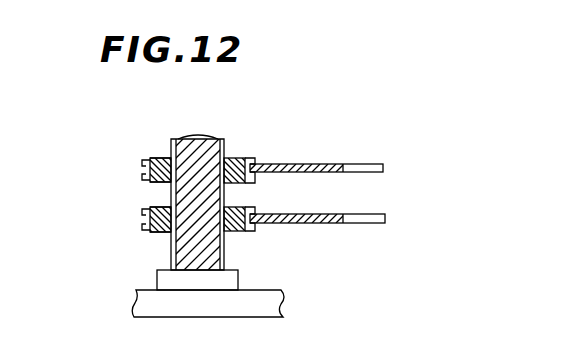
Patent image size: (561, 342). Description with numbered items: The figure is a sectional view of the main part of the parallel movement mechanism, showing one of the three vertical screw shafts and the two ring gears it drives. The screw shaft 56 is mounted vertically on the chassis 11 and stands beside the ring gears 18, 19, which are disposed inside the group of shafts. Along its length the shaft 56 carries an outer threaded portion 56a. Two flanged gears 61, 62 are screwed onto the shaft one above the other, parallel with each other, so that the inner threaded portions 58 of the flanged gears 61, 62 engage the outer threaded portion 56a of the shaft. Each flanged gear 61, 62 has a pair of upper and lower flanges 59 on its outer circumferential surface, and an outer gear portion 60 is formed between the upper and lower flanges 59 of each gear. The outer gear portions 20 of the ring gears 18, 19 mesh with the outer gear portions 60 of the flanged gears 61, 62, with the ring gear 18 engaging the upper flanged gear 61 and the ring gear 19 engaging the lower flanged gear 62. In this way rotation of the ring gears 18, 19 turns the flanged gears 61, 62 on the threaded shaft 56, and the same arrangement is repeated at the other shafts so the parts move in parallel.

The chassis 11 is at (285, 297).
The ring gear 18 is at (383, 168).
The ring gear 19 is at (385, 220).
The outer gear portion 20 is at (245, 158).
The screw shaft 56 is at (196, 140).
The outer threaded portion 56a is at (228, 150).
The inner threaded portion 58 is at (178, 140).
The flange 59 is at (145, 160).
The outer gear portion 60 is at (143, 171).
The flanged gear 61 is at (157, 160).
The flanged gear 62 is at (150, 236).